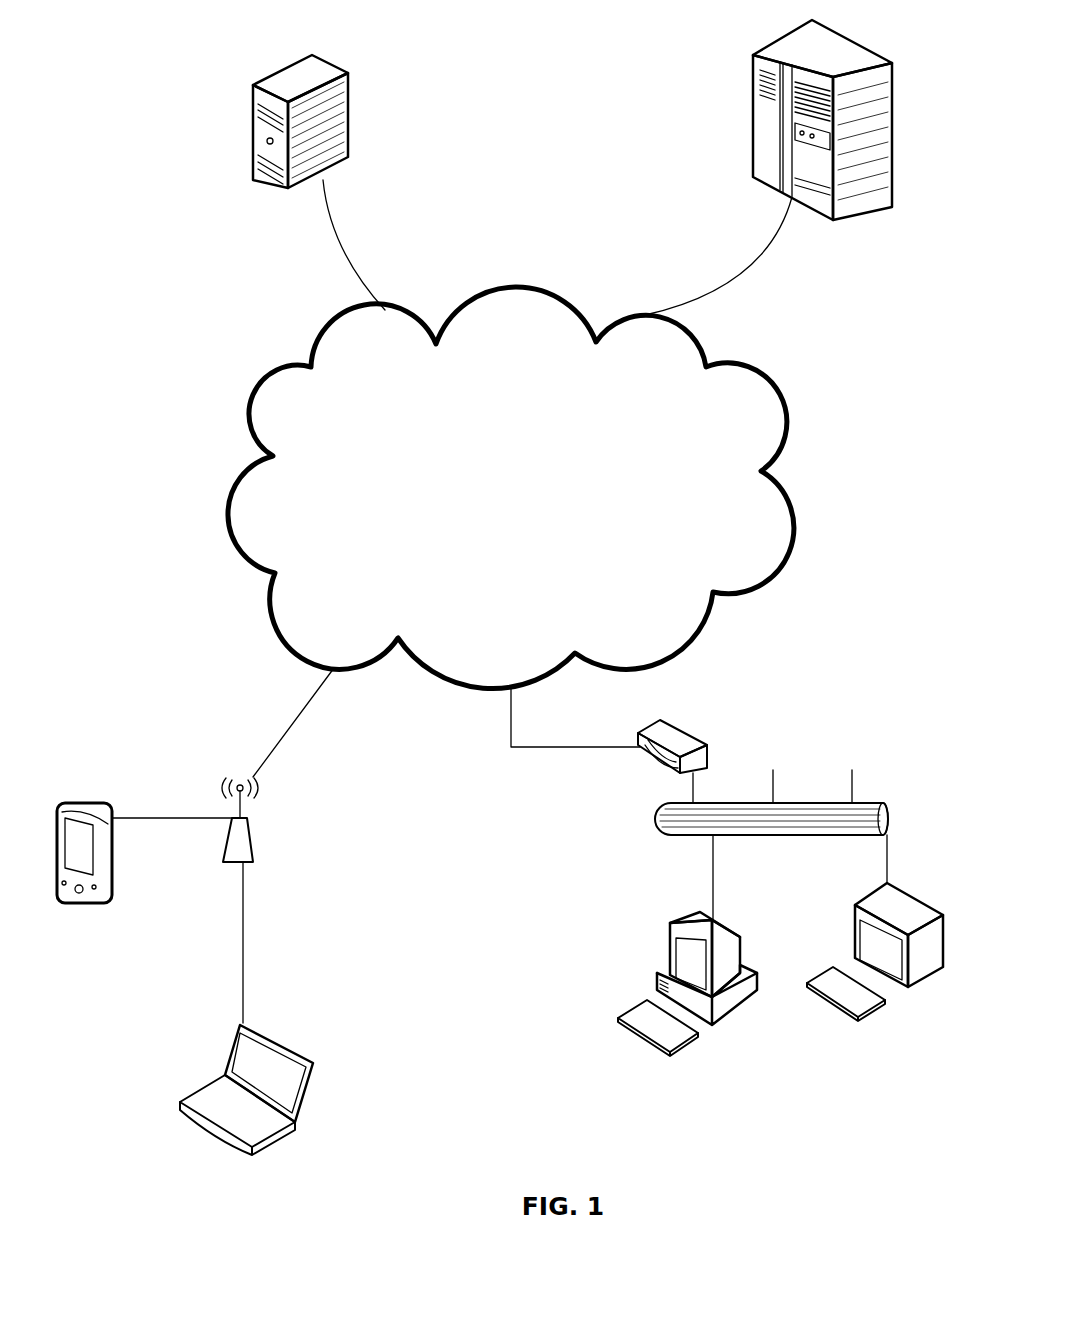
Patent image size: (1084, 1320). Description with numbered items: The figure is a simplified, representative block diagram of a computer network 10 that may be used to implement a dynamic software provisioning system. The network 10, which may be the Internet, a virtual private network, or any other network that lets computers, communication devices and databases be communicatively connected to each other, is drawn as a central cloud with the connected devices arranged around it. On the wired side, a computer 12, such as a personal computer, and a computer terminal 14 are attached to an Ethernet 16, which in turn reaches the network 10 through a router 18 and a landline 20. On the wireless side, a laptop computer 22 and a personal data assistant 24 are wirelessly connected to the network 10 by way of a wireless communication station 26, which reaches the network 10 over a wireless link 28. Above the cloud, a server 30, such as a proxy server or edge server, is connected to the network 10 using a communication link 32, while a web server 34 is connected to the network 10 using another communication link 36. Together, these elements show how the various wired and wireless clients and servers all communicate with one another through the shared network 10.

The network 10 is at (185, 368).
The computer 12 is at (663, 968).
The computer terminal 14 is at (925, 903).
The Ethernet 16 is at (882, 802).
The router 18 is at (707, 745).
The landline 20 is at (552, 748).
The laptop computer 22 is at (270, 1143).
The personal data assistant 24 is at (88, 808).
The wireless communication station 26 is at (253, 853).
The wireless link 28 is at (285, 733).
The server 30 is at (347, 122).
The communication link 32 is at (358, 277).
The web server 34 is at (848, 218).
The communication link 36 is at (755, 258).